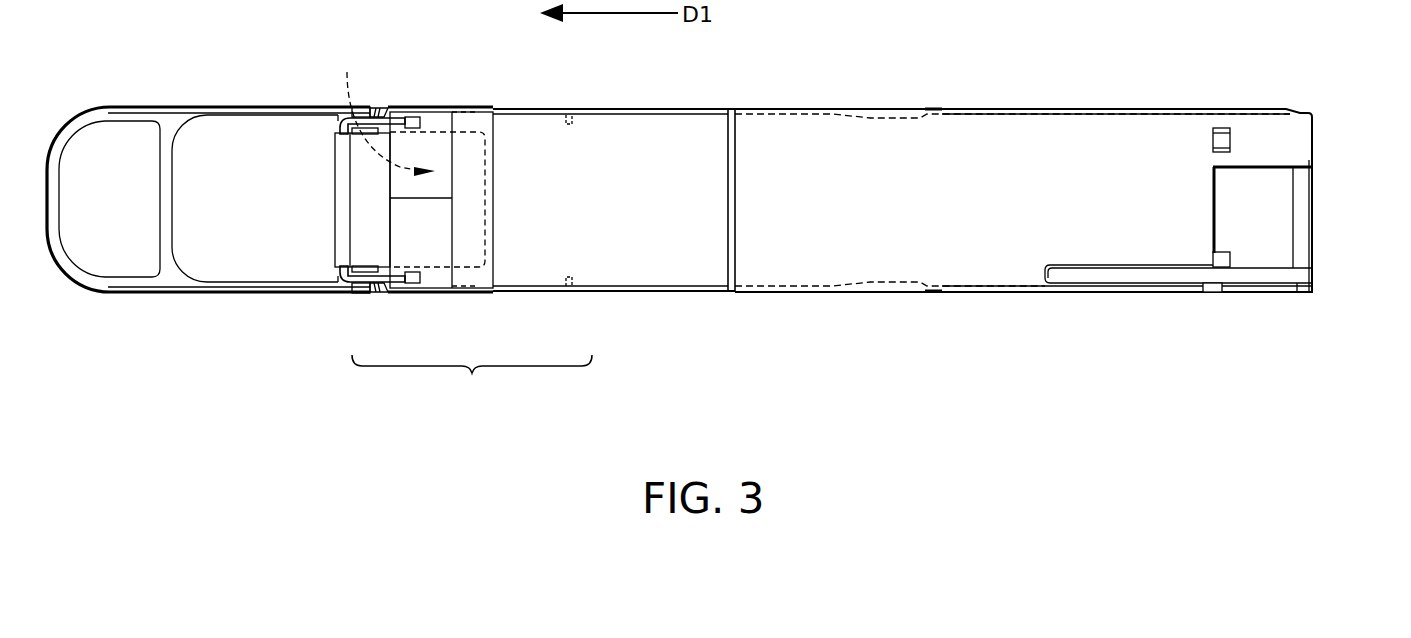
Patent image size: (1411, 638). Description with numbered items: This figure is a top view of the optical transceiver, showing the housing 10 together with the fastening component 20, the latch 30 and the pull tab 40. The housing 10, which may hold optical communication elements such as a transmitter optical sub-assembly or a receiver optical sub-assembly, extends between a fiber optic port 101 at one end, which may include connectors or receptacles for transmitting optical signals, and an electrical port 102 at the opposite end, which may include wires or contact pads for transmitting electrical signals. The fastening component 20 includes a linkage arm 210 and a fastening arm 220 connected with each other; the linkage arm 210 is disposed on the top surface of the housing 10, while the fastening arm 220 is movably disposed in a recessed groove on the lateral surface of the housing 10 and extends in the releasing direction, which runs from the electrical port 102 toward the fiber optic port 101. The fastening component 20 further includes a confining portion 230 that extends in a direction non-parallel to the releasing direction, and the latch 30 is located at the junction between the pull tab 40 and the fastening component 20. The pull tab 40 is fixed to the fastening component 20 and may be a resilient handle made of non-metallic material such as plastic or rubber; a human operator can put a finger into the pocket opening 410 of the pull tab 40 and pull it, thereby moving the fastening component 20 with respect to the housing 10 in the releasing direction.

The housing 10 is at (1117, 128).
The fiber optic port 101 is at (381, 111).
The electrical port 102 is at (1332, 286).
The fastening component 20 is at (543, 255).
The linkage arm 210 is at (433, 275).
The fastening arm 220 is at (557, 289).
The confining portion 230 is at (370, 295).
The latch 30 is at (371, 294).
The pull tab 40 is at (131, 114).
The pocket opening 410 is at (233, 168).